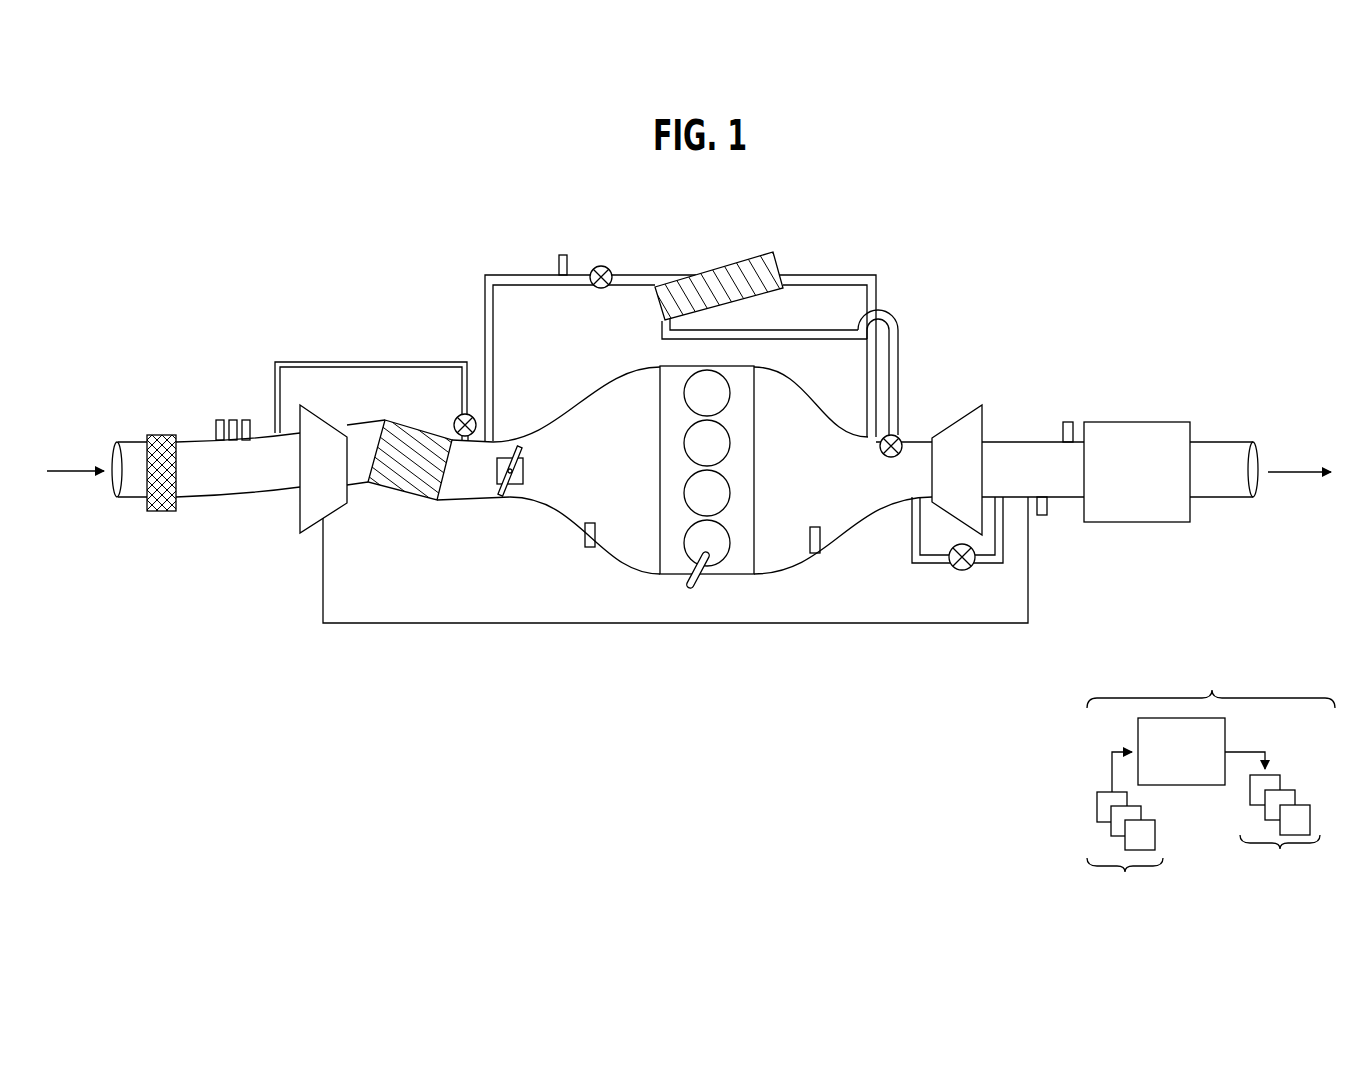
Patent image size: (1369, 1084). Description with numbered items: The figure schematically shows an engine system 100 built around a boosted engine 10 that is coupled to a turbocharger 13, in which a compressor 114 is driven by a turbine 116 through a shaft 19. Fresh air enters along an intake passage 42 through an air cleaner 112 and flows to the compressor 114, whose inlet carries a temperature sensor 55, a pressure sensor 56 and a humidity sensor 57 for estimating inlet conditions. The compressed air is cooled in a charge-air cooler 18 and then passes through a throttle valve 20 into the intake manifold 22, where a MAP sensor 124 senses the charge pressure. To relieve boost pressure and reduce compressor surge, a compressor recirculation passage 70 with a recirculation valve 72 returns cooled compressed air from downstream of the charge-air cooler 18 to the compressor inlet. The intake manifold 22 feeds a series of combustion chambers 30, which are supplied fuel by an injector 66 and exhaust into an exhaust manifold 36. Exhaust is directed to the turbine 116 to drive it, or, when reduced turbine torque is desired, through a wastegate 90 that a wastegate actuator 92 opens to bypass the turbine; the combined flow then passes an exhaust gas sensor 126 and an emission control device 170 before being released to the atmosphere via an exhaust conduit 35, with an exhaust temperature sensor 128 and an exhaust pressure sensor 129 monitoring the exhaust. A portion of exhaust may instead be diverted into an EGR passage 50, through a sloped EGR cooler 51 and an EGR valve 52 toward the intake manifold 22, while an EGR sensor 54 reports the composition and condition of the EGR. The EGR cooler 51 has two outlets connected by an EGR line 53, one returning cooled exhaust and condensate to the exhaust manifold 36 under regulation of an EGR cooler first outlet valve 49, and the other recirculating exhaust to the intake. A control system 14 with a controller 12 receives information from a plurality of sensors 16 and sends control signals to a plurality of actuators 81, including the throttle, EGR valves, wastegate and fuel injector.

The engine system 100 is at (264, 258).
The intake passage 42 is at (133, 498).
The air cleaner 112 is at (160, 434).
The temperature sensor 55 is at (220, 419).
The pressure sensor 56 is at (233, 419).
The humidity sensor 57 is at (246, 419).
The compressor 114 is at (342, 469).
The turbocharger 13 is at (352, 545).
The compressor recirculation passage 70 is at (344, 362).
The recirculation valve 72 is at (463, 413).
The charge-air cooler 18 is at (388, 423).
The throttle valve 20 is at (522, 484).
The intake manifold 22 is at (576, 470).
The engine 10 is at (755, 450).
The combustion chambers 30 is at (727, 386).
The injector 66 is at (702, 580).
The manifold air pressure sensor 124 is at (584, 541).
The exhaust gas sensor 126 is at (821, 534).
The exhaust manifold 36 is at (843, 470).
The shaft 19 is at (543, 623).
The EGR passage 50 is at (835, 282).
The EGR cooler 51 is at (707, 278).
The EGR valve 52 is at (598, 288).
The EGR line 53 is at (493, 274).
The EGR sensor 54 is at (567, 254).
The EGR cooler first outlet valve 49 is at (884, 455).
The turbine 116 is at (957, 470).
The wastegate 90 is at (912, 562).
The wastegate actuator 92 is at (962, 571).
The exhaust conduit 35 is at (1230, 442).
The exhaust temperature sensor 128 is at (1042, 516).
The exhaust pressure sensor 129 is at (1068, 421).
The emission control device 170 is at (1124, 421).
The control system 14 is at (1211, 677).
The controller 12 is at (1188, 755).
The sensors 16 is at (1125, 850).
The actuators 81 is at (1280, 834).